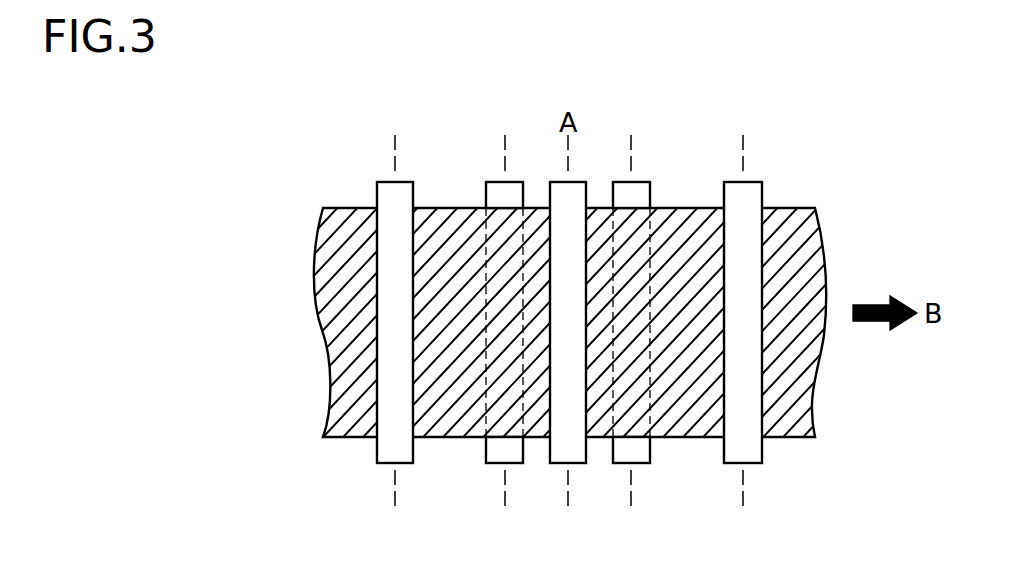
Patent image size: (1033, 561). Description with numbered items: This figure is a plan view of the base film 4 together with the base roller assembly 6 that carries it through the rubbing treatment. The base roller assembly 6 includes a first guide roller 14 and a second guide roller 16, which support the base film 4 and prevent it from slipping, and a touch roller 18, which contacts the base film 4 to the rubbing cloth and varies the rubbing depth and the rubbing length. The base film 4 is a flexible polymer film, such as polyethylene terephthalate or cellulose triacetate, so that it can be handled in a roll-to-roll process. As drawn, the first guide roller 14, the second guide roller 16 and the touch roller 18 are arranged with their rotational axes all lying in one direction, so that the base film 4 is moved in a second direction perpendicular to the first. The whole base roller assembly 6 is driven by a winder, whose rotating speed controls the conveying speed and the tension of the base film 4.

The base film 4 is at (322, 281).
The base roller assembly 6 is at (762, 172).
The first guide roller 14 is at (389, 447).
The second guide roller 16 is at (638, 190).
The touch roller 18 is at (557, 440).